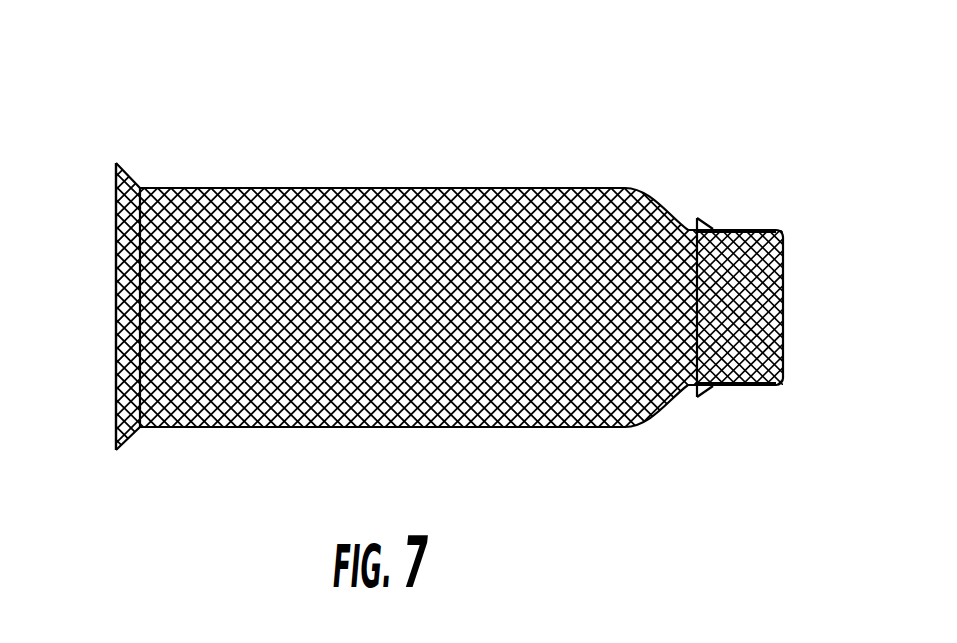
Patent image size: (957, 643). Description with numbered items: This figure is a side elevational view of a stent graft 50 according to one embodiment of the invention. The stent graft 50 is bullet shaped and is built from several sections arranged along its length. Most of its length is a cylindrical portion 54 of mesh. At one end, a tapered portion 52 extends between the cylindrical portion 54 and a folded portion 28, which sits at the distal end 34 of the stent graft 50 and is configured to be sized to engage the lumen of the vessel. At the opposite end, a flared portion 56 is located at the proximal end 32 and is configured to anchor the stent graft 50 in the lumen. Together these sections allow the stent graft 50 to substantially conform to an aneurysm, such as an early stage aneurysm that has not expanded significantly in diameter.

The stent graft 50 is at (378, 146).
The cylindrical portion 54 is at (522, 188).
The flared portion 56 is at (118, 163).
The proximal end 32 is at (116, 333).
The tapered portion 52 is at (665, 206).
The folded portion 28 is at (763, 228).
The distal end 34 is at (784, 292).